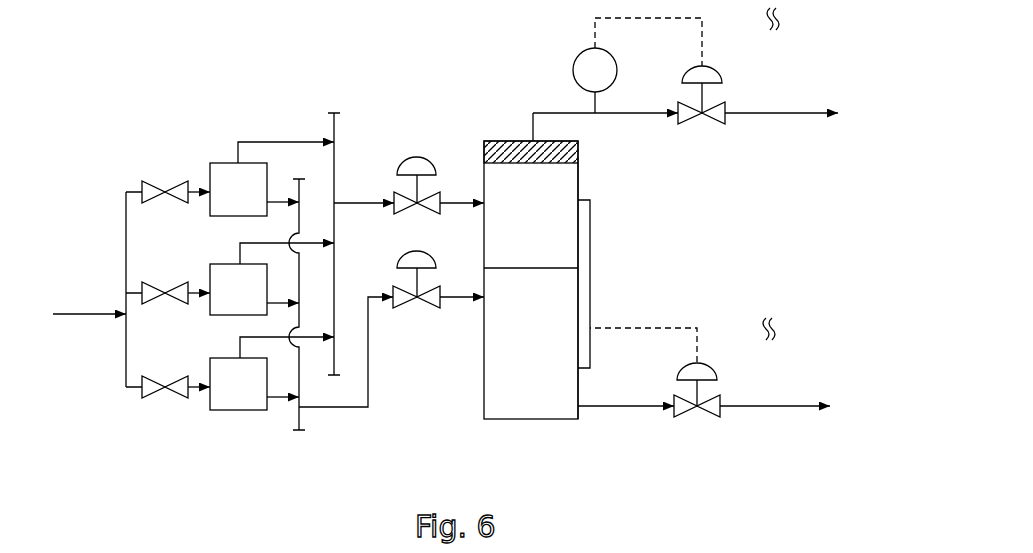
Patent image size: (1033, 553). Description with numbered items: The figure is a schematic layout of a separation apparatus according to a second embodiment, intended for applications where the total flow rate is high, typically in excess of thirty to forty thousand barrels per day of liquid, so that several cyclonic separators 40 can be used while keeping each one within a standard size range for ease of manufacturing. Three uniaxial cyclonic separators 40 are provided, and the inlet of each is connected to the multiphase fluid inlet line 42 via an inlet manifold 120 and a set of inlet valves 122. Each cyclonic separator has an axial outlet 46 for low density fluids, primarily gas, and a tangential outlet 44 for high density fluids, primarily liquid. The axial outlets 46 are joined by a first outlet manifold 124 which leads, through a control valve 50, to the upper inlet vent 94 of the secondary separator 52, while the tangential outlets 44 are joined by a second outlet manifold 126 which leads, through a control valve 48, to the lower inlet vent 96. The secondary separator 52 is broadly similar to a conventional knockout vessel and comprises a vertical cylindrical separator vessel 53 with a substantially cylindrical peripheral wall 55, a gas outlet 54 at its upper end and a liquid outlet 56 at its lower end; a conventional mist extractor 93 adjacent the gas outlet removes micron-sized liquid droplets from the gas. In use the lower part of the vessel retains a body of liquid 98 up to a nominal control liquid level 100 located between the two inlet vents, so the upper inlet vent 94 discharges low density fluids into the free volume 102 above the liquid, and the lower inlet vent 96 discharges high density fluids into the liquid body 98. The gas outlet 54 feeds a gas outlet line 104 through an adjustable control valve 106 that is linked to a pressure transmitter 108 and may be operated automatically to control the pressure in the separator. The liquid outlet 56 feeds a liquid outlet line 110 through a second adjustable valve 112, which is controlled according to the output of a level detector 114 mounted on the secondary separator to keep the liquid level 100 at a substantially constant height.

The inlet line 42 is at (77, 305).
The inlet manifold 120 is at (125, 225).
The inlet valves 122 is at (173, 190).
The cyclonic separator 40 is at (213, 163).
The axial outlet 46 is at (278, 137).
The tangential outlet 44 is at (277, 198).
The first outlet manifold 124 is at (338, 130).
The second outlet manifold 126 is at (305, 425).
The control valve 50 is at (429, 157).
The upper inlet vent 94 is at (447, 206).
The control valve 48 is at (402, 254).
The lower inlet vent 96 is at (455, 300).
The secondary separator 52 is at (487, 395).
The mist extractor 93 is at (577, 152).
The free volume 102 is at (552, 201).
The body of liquid 98 is at (546, 366).
The liquid level 100 is at (503, 267).
The peripheral wall 55 is at (577, 218).
The separator vessel 53 is at (578, 307).
The level detector 114 is at (597, 262).
The gas outlet 54 is at (528, 125).
The pressure transmitter 108 is at (572, 52).
The adjustable control valve 106 is at (717, 67).
The gas outlet line 104 is at (797, 113).
The liquid outlet 56 is at (642, 412).
The second adjustable valve 112 is at (715, 368).
The liquid outlet line 110 is at (782, 408).